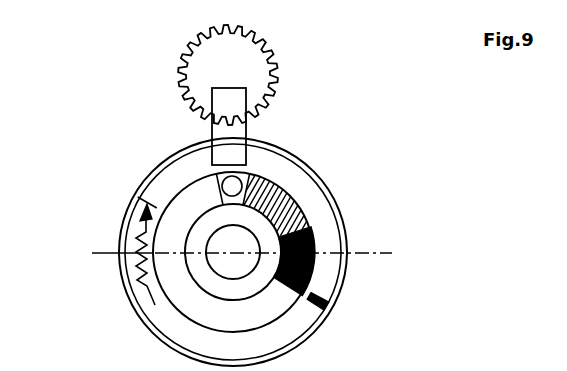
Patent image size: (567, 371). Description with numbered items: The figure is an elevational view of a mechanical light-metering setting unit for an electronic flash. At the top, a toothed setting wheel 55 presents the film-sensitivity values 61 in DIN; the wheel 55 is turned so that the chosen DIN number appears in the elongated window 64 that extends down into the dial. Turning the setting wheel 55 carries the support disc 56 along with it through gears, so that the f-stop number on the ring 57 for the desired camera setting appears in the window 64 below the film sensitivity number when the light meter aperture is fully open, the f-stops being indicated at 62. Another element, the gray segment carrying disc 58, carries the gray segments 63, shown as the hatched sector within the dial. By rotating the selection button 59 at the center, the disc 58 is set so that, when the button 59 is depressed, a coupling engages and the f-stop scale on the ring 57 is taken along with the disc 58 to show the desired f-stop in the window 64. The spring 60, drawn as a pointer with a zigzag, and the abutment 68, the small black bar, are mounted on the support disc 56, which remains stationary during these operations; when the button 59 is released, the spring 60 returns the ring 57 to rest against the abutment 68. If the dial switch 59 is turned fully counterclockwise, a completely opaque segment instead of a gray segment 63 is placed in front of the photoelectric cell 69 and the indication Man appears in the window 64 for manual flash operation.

The setting wheel 55 is at (247, 50).
The film-sensitivity values 61 is at (182, 77).
The window 64 is at (240, 130).
The support disc 56 is at (296, 158).
The f-stops 62 is at (172, 174).
The photoelectric cell 69 is at (213, 190).
The gray segments 63 is at (302, 216).
The spring 60 is at (146, 243).
The ring 57 is at (333, 257).
The gray segment carrying disc 58 is at (327, 270).
The selection button 59 is at (207, 252).
The abutment 68 is at (323, 307).